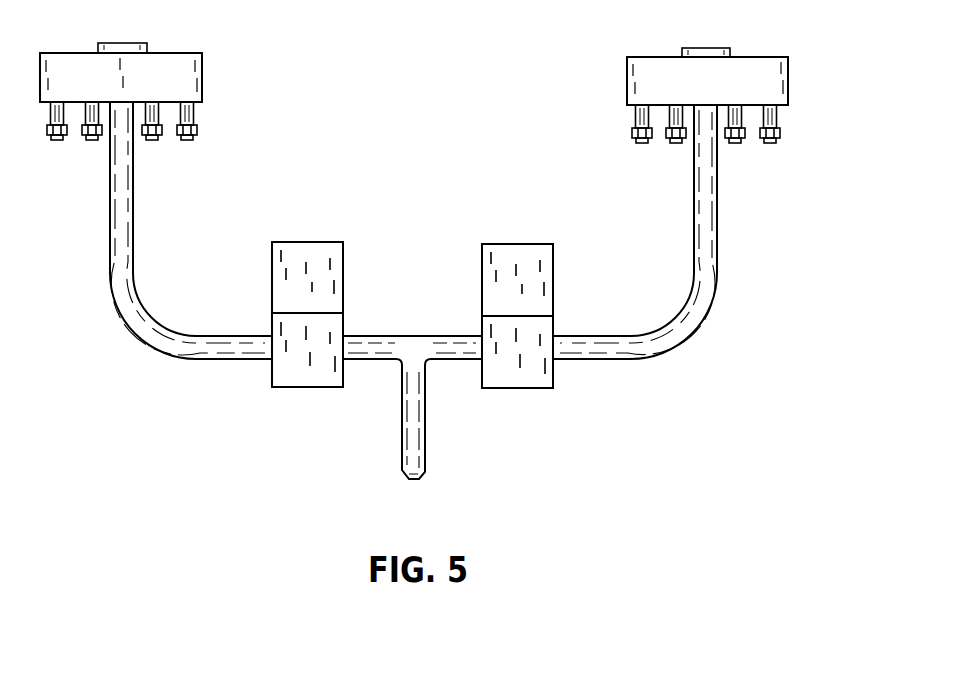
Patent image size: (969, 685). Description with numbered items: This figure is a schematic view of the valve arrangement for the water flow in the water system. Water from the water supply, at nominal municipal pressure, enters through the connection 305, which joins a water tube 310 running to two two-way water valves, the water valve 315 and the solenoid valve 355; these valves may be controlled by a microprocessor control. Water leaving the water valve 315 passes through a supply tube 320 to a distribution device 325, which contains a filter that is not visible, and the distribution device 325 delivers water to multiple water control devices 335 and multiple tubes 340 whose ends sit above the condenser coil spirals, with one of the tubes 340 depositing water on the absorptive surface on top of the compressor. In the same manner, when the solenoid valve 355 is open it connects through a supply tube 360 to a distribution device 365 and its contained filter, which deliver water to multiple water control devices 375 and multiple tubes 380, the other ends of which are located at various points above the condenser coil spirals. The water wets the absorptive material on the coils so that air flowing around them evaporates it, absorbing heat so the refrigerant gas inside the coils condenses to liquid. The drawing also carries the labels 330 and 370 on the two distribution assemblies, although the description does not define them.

The connection 305 is at (408, 449).
The water tube 310 is at (413, 335).
The two-way water valve 315 is at (278, 325).
The supply tube 320 is at (128, 311).
The distribution device 325 is at (180, 53).
The mounting tab 330 is at (110, 42).
The water control devices 335 is at (197, 128).
The tubes 340 is at (189, 141).
The solenoid valve 355 is at (545, 328).
The supply tube 360 is at (705, 316).
The distribution device 365 is at (790, 80).
The plate label 370 is at (727, 98).
The water control devices 375 is at (780, 130).
The tubes 380 is at (772, 144).